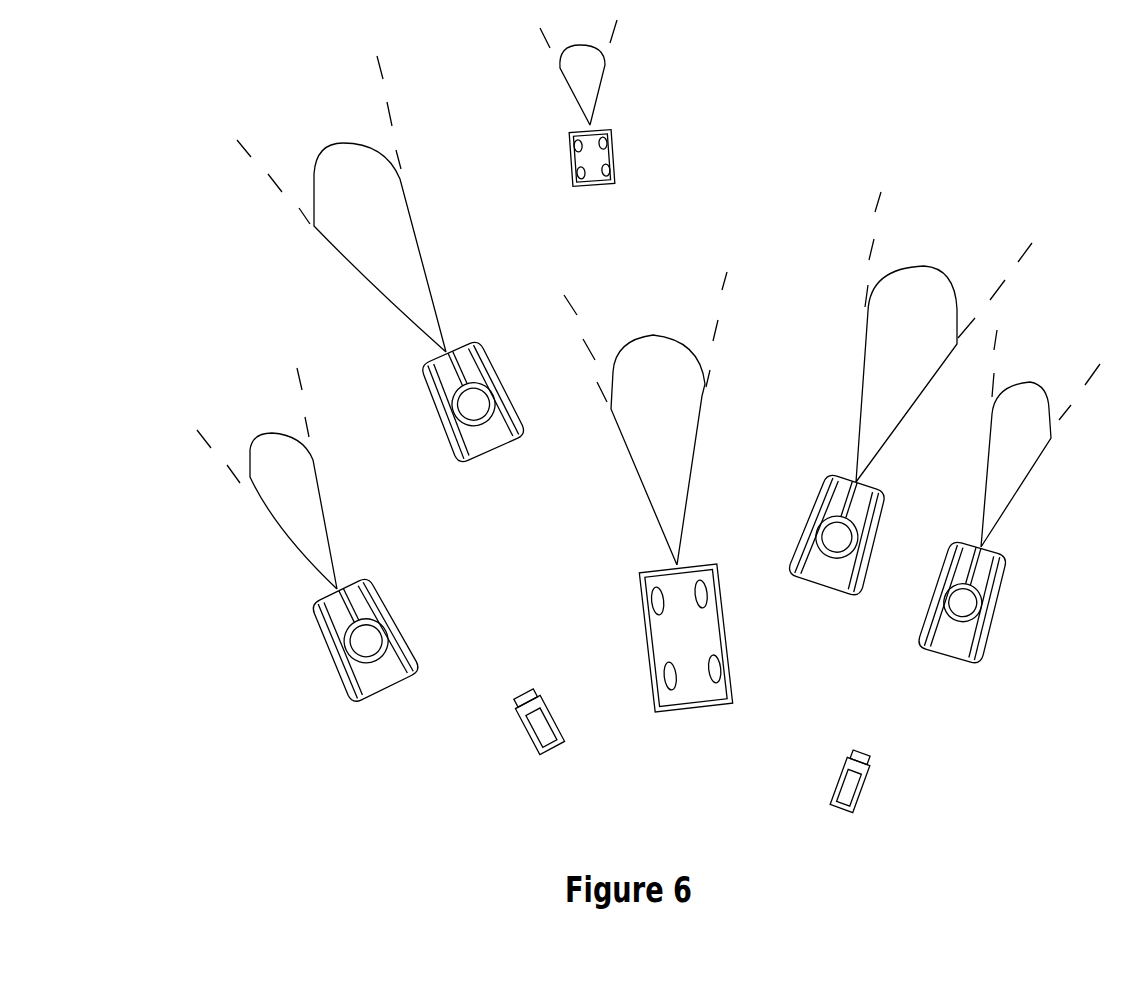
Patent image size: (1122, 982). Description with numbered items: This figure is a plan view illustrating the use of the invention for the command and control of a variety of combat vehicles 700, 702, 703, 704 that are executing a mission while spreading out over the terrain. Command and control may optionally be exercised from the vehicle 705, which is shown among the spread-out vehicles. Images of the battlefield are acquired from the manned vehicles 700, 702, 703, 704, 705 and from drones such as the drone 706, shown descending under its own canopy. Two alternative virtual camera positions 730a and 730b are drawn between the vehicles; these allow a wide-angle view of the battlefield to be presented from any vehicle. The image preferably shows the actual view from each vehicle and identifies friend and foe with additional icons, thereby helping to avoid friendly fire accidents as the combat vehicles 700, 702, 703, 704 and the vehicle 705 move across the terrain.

The combat vehicle 700 is at (332, 692).
The combat vehicle 702 is at (490, 478).
The combat vehicle 703 is at (904, 394).
The combat vehicle 704 is at (1008, 497).
The vehicle 705 is at (738, 673).
The drone 706 is at (615, 172).
The virtual camera position 730a is at (590, 733).
The virtual camera position 730b is at (875, 760).